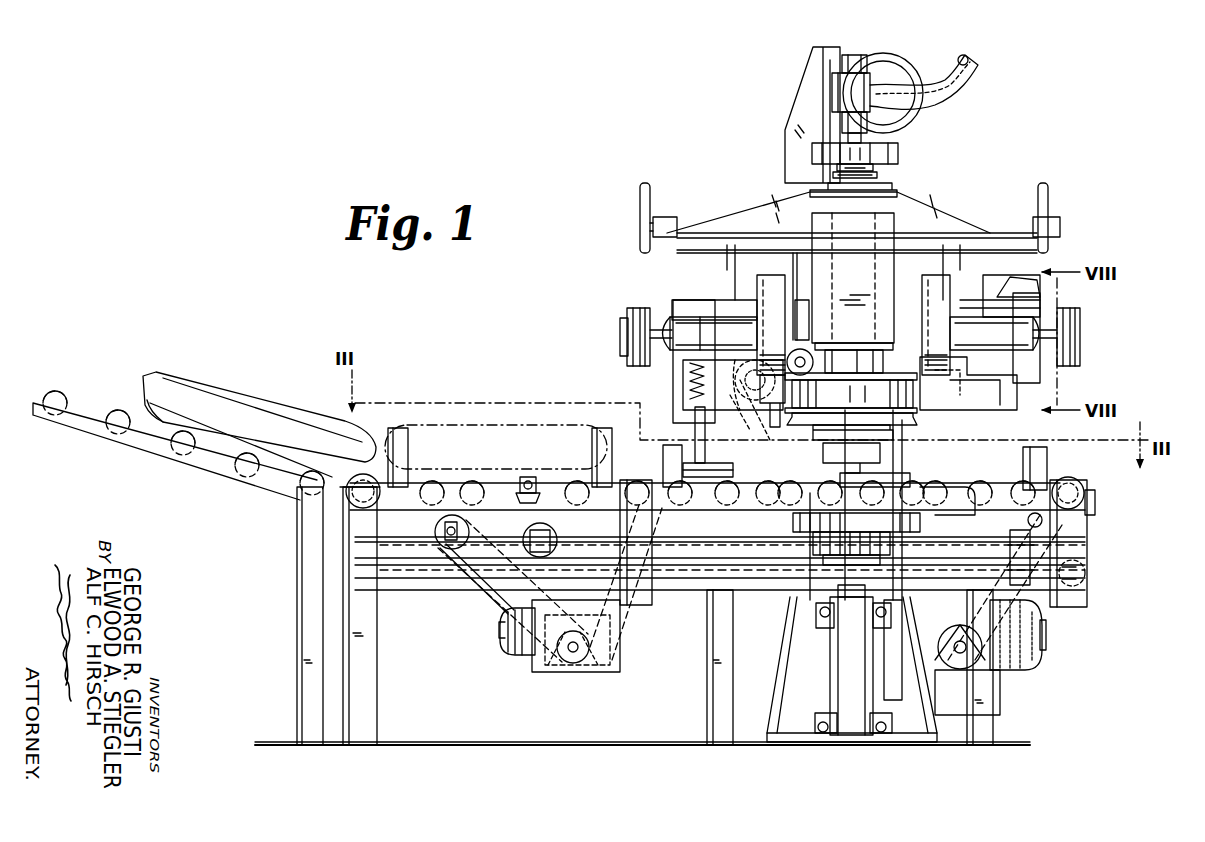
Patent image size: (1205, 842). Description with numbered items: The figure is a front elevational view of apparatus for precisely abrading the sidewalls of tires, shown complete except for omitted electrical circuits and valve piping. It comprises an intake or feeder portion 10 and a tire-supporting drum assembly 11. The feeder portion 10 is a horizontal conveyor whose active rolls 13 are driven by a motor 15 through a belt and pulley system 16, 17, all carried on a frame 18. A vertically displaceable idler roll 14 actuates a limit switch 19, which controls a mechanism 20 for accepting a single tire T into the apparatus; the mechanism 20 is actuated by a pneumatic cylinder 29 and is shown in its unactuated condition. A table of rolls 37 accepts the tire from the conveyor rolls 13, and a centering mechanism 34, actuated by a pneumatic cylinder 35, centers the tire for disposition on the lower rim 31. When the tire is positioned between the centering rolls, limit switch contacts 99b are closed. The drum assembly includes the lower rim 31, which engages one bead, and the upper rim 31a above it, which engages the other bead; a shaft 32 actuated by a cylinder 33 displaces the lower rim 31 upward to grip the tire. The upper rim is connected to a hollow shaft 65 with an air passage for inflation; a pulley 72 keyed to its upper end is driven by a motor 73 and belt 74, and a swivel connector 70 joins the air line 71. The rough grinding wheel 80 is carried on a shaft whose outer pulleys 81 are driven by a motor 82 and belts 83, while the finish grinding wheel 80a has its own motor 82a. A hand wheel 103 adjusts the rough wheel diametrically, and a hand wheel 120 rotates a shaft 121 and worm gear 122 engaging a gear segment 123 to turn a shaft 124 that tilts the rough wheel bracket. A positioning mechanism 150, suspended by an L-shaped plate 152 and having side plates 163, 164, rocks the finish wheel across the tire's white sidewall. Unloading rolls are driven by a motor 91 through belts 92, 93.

The tire T is at (226, 392).
The feeder portion 10 is at (452, 598).
The drum assembly 11 is at (995, 460).
The active rolls 13 is at (465, 480).
The idler roll 14 is at (528, 477).
The motor 15 is at (506, 654).
The belt 16 is at (495, 610).
The pulley 17 is at (439, 578).
The frame 18 is at (640, 605).
The limit switch 19 is at (548, 520).
The mechanism 20 is at (418, 410).
The pneumatic cylinder 29 is at (598, 575).
The lower rim 31 is at (795, 520).
The upper rim 31a is at (905, 412).
The shaft 32 is at (827, 594).
The cylinder 33 is at (855, 728).
The centering mechanism 34 is at (1062, 468).
The pneumatic cylinder 35 is at (1086, 572).
The table rolls 37 is at (915, 483).
The hollow shaft 65 is at (866, 140).
The swivel connector 70 is at (835, 90).
The air line 71 is at (970, 72).
The pulley 72 is at (889, 164).
The motor 73 is at (890, 68).
The belt 74 is at (899, 152).
The rough grinding wheel 80 is at (745, 375).
The finish grinding wheel 80a is at (947, 375).
The pulleys 81 is at (625, 345).
The motor 82 is at (666, 320).
The motor 82a is at (1062, 351).
The belts 83 is at (642, 308).
The motor 91 is at (1033, 640).
The belt 92 is at (966, 623).
The belt 93 is at (997, 487).
The limit switch contacts 99b is at (958, 514).
The hand wheel 103 is at (644, 190).
The hand wheel 120 is at (734, 467).
The shaft 121 is at (707, 450).
The worm gear 122 is at (690, 387).
The gear segment 123 is at (775, 424).
The shaft 124 is at (765, 410).
The positioning mechanism 150 is at (1075, 300).
The L-shaped plate 152 is at (966, 302).
The side plate 163 is at (965, 398).
The side plate 164 is at (1020, 398).